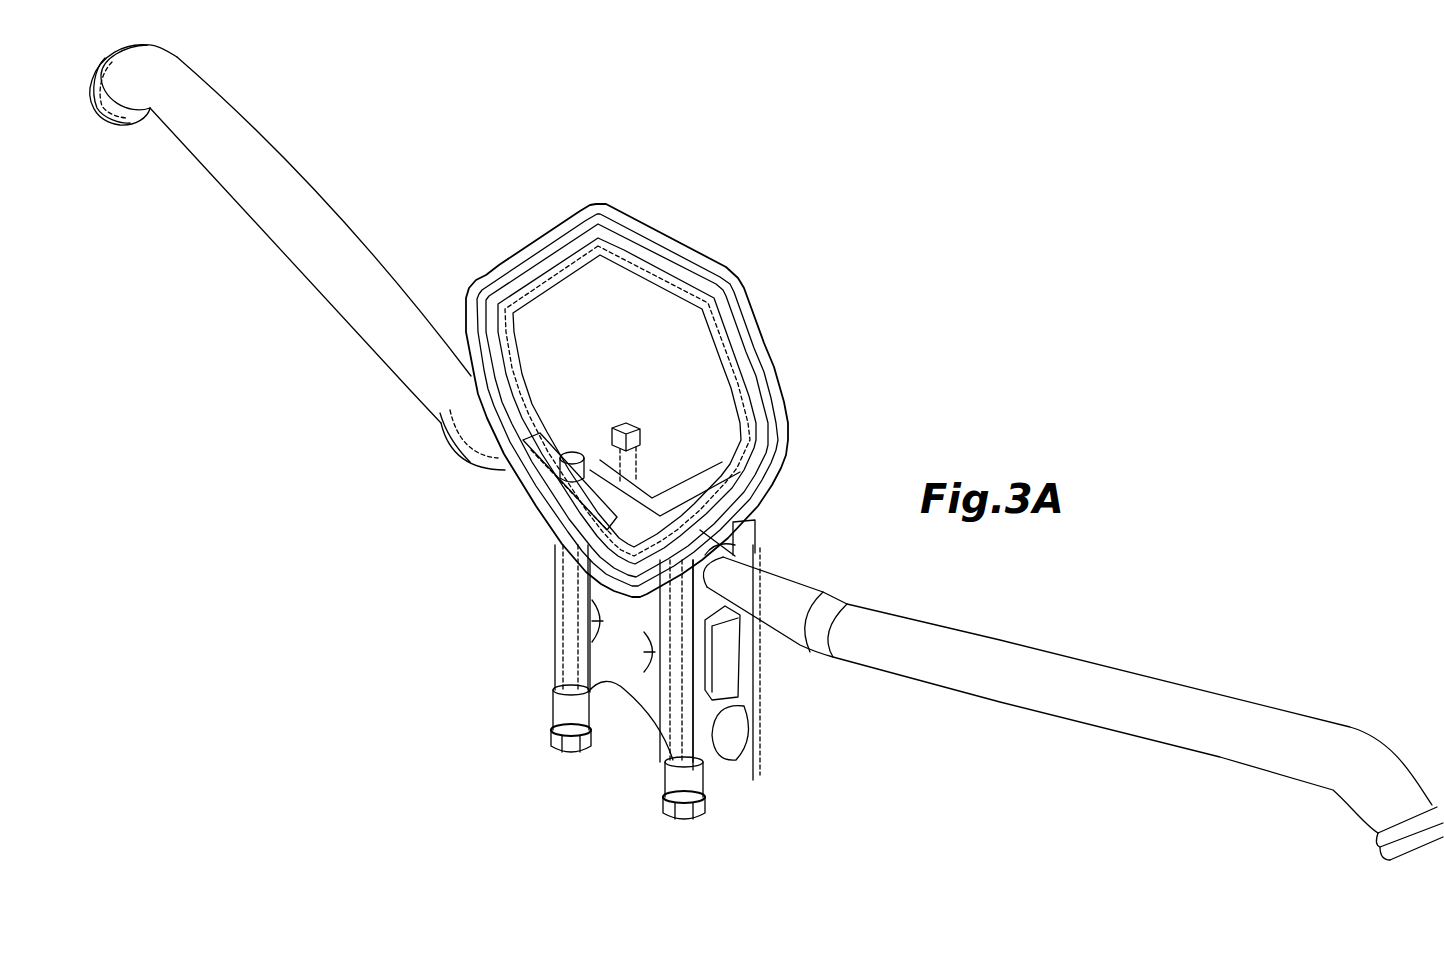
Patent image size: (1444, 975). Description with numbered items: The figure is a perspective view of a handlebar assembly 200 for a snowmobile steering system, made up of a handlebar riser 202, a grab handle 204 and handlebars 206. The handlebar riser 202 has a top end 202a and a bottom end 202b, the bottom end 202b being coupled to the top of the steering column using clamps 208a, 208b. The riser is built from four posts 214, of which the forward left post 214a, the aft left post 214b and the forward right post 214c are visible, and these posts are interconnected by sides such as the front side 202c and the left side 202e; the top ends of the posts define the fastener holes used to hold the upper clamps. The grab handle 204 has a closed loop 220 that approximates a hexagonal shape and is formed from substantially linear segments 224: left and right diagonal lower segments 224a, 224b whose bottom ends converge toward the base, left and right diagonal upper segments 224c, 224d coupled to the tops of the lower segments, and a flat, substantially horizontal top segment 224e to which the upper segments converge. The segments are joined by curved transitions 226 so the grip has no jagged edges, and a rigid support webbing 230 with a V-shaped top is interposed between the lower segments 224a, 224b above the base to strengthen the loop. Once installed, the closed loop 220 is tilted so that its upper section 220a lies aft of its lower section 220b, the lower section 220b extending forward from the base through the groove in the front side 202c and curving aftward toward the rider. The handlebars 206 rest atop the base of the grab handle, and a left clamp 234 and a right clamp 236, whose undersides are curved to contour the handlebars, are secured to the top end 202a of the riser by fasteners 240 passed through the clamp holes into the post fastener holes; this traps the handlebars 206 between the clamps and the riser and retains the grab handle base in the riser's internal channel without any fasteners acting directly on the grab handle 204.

The handlebar assembly 200 is at (947, 287).
The handlebar riser 202 is at (673, 700).
The top end of handlebar riser 202a is at (708, 636).
The bottom end of handlebar riser 202b is at (735, 775).
The front side of handlebar riser 202c is at (625, 673).
The left side of handlebar riser 202e is at (745, 716).
The grab handle 204 is at (753, 331).
The handlebars 206 is at (205, 138).
The clamp 208a is at (678, 787).
The clamp 208b is at (553, 713).
The posts 214 is at (655, 659).
The forward left post 214a is at (740, 740).
The aft left post 214b is at (752, 704).
The forward right post 214c is at (556, 683).
The closed loop 220 is at (640, 217).
The upper section of closed loop 220a is at (735, 270).
The lower section of closed loop 220b is at (510, 487).
The linear segments 224 is at (672, 235).
The left diagonal lower segment 224a is at (708, 548).
The right diagonal lower segment 224b is at (495, 441).
The left diagonal upper segment 224c is at (772, 364).
The right diagonal upper segment 224d is at (516, 250).
The top segment 224e is at (700, 250).
The curved transitions 226 is at (786, 437).
The support webbing 230 is at (580, 515).
The left clamp 234 is at (752, 535).
The right clamp 236 is at (660, 460).
The fasteners 240 is at (620, 430).